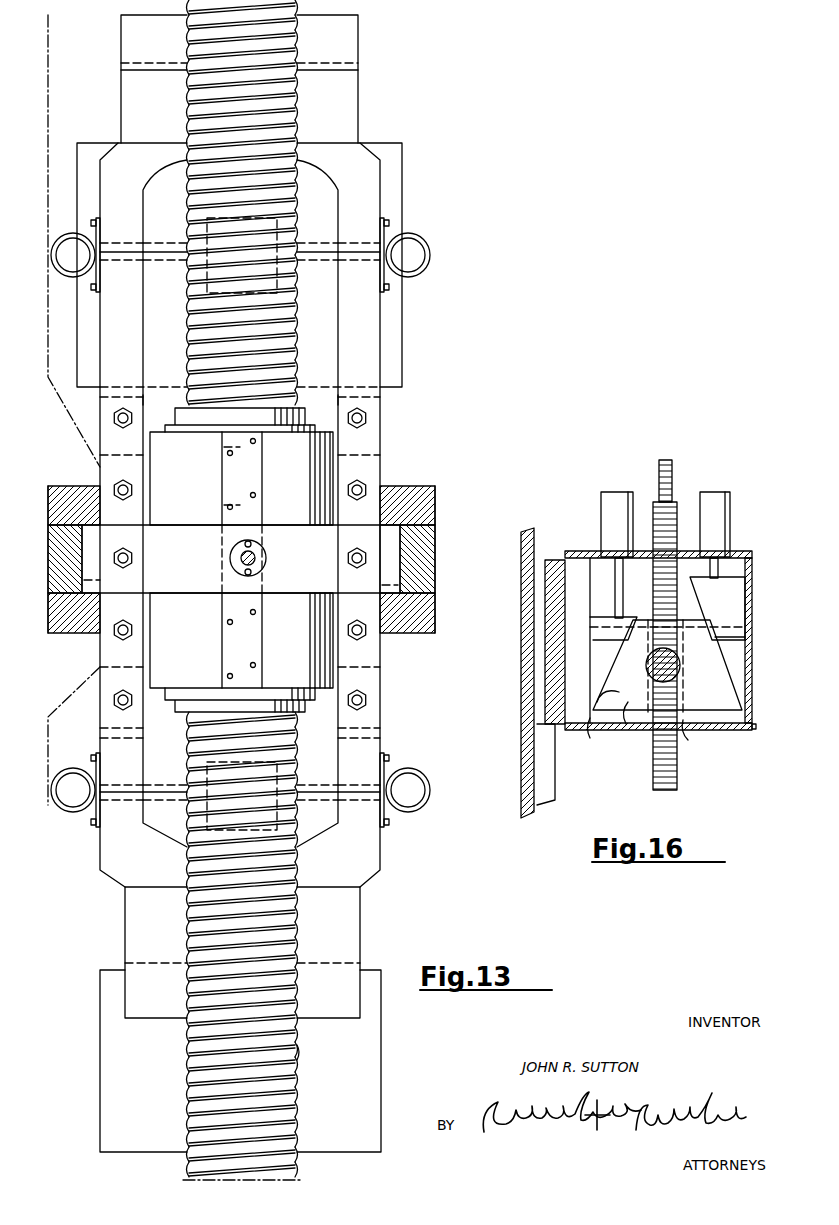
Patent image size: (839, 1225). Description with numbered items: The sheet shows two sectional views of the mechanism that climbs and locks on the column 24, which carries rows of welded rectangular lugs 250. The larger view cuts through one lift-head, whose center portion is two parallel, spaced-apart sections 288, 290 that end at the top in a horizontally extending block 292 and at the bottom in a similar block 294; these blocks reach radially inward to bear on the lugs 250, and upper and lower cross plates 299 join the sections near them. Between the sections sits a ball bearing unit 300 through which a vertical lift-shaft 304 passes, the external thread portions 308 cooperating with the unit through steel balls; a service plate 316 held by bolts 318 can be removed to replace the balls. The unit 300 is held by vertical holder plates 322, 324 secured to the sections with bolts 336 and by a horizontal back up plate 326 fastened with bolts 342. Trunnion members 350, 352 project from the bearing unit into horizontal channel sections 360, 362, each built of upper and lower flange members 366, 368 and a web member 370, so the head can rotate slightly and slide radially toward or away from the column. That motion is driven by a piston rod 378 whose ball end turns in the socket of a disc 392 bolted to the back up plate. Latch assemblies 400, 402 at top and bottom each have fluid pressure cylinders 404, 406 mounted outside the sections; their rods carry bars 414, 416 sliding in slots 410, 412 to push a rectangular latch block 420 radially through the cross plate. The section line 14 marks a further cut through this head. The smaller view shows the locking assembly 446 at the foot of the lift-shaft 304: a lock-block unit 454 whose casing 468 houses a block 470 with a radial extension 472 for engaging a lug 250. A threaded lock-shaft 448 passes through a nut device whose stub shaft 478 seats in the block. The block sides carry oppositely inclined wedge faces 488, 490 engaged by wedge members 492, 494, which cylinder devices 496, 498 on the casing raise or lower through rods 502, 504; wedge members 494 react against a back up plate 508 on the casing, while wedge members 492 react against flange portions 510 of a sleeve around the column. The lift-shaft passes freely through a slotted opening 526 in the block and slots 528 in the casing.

In FIG. 13, the section line 14- 14 is at (62, 70).
In FIG. 16, the column 24 is at (521, 546).
In FIG. 13, the lugs 250 is at (402, 325).
In FIG. 16, the lugs 250 is at (540, 754).
In FIG. 13, the section 288 is at (100, 305).
In FIG. 13, the section 290 is at (380, 303).
In FIG. 13, the block 292 is at (356, 36).
In FIG. 13, the block 294 is at (361, 926).
In FIG. 13, the cross plates 299 is at (327, 348).
In FIG. 13, the ball bearing unit 300 is at (210, 478).
In FIG. 13, the lift-shaft 304 is at (299, 108).
In FIG. 16, the lift-shaft 304 is at (677, 772).
In FIG. 13, the external thread portions 308 is at (305, 1065).
In FIG. 13, the service plate 316 is at (248, 645).
In FIG. 13, the bolts 318 is at (256, 613).
In FIG. 13, the holder plate 322 is at (105, 463).
In FIG. 13, the holder plate 324 is at (380, 470).
In FIG. 13, the back up plate 326 is at (163, 603).
In FIG. 13, the bolts 336 is at (113, 418).
In FIG. 13, the bolts 342 is at (133, 556).
In FIG. 13, the trunnion member 350 is at (95, 578).
In FIG. 13, the trunnion member 352 is at (395, 570).
In FIG. 13, the channel section 360 is at (48, 532).
In FIG. 13, the channel section 362 is at (436, 536).
In FIG. 13, the upper flange member 366 is at (49, 505).
In FIG. 13, the lower flange member 368 is at (52, 626).
In FIG. 13, the web member 370 is at (52, 558).
In FIG. 13, the piston rod 378 is at (256, 555).
In FIG. 13, the disc 392 is at (257, 564).
In FIG. 13, the latch assembly 400 is at (412, 234).
In FIG. 13, the latch assembly 402 is at (424, 808).
In FIG. 13, the fluid pressure cylinder 404 is at (56, 242).
In FIG. 13, the fluid pressure cylinder 406 is at (432, 241).
In FIG. 13, the slot 410 is at (117, 250).
In FIG. 13, the slot 412 is at (354, 248).
In FIG. 13, the bar 414 is at (160, 248).
In FIG. 13, the bar 416 is at (312, 248).
In FIG. 13, the latch block 420 is at (272, 230).
In FIG. 16, the locking assembly 446 is at (767, 553).
In FIG. 16, the lock-shaft 448 is at (672, 466).
In FIG. 16, the lock-block unit 454 is at (770, 608).
In FIG. 16, the casing 468 is at (718, 733).
In FIG. 16, the block 470 is at (628, 735).
In FIG. 16, the extension 472 is at (588, 735).
In FIG. 16, the stub shaft 478 is at (678, 670).
In FIG. 16, the wedge face 488 is at (585, 695).
In FIG. 16, the wedge face 490 is at (725, 662).
In FIG. 16, the wedge member 492 is at (590, 623).
In FIG. 16, the wedge member 494 is at (735, 595).
In FIG. 16, the cylinder device 496 is at (600, 497).
In FIG. 16, the cylinder device 498 is at (720, 497).
In FIG. 16, the rod 502 is at (610, 570).
In FIG. 16, the rod 504 is at (720, 568).
In FIG. 16, the back up plate 508 is at (752, 632).
In FIG. 16, the flange portion 510 is at (565, 571).
In FIG. 16, the slotted opening 526 is at (683, 686).
In FIG. 16, the slot 528 is at (680, 738).